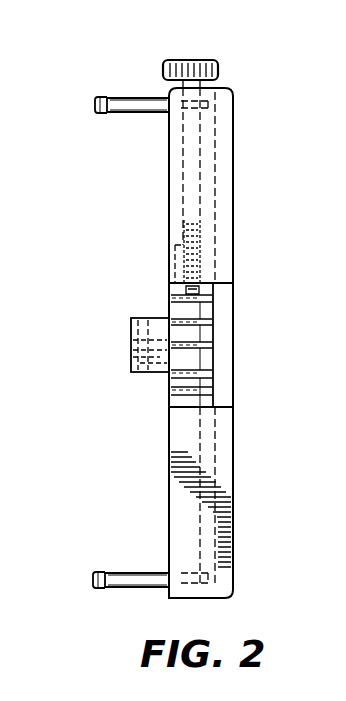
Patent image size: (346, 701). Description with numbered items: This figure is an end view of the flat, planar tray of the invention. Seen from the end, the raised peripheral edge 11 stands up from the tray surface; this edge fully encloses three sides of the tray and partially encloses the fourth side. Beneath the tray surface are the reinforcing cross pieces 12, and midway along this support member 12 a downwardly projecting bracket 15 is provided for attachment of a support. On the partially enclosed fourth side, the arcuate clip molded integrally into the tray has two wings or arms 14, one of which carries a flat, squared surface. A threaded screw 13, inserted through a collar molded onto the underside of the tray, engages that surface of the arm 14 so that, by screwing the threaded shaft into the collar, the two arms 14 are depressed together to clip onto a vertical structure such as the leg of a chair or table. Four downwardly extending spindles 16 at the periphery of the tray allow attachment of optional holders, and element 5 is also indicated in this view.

The raised peripheral edge 11 is at (236, 97).
The reinforcing cross pieces 12 is at (214, 462).
The threaded screw 13 is at (217, 60).
The arms 14 is at (213, 312).
The bracket 15 is at (131, 318).
The spindles 16 is at (148, 98).
The workpiece 5 is at (127, 343).